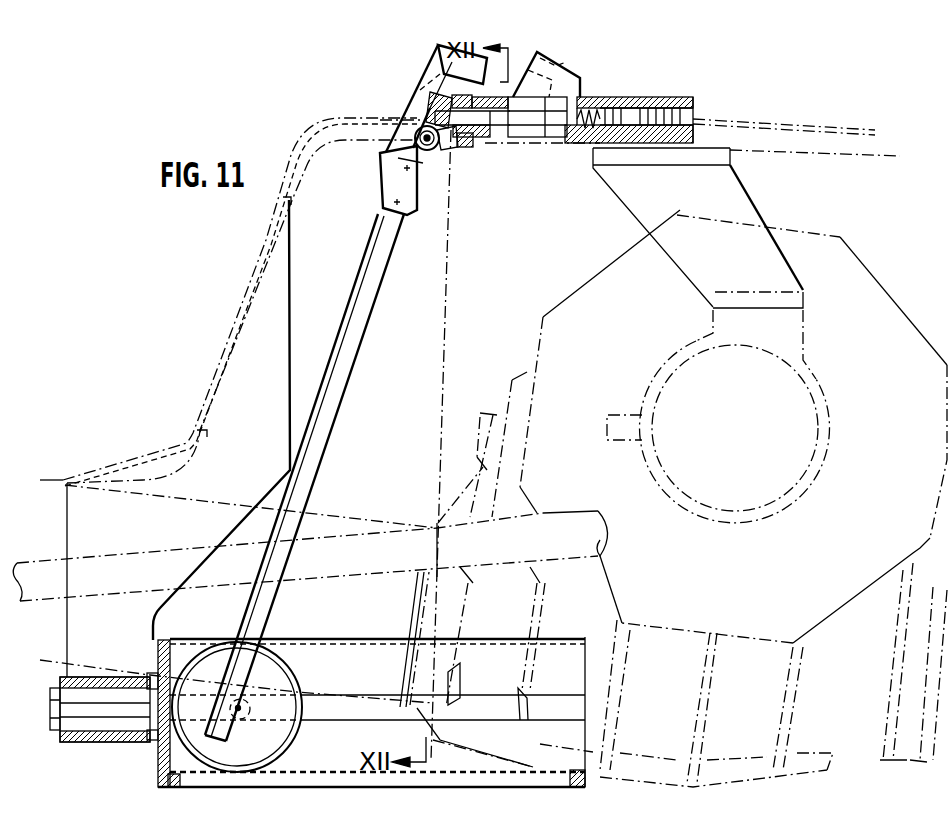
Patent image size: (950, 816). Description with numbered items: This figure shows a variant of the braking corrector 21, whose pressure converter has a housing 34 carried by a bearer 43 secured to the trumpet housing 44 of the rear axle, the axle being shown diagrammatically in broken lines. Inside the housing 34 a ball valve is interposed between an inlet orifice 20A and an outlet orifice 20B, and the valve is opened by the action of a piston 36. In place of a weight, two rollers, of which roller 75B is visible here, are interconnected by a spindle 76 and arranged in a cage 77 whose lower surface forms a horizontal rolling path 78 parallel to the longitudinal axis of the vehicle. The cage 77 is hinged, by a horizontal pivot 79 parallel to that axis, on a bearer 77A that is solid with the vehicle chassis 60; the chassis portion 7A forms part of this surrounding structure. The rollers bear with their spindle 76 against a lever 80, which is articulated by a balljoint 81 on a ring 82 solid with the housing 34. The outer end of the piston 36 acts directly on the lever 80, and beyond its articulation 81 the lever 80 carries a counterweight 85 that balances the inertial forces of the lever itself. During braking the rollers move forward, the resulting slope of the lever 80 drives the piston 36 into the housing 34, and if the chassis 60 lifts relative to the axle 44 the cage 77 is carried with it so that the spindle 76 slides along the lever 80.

The machine frame 7A is at (218, 483).
The inlet orifice 20A is at (690, 105).
The outlet orifice 20B is at (548, 70).
The braking corrector 21 is at (476, 198).
The housing 34 is at (549, 148).
The piston 36 is at (497, 138).
The bearer 43 is at (766, 208).
The trumpet housing 44 is at (838, 393).
The vehicle chassis 60 is at (289, 142).
The roller 75B is at (306, 664).
The spindle 76 is at (248, 717).
The cage 77 is at (548, 632).
The bearer 77A is at (300, 326).
The horizontal rolling path 78 is at (327, 777).
The horizontal pivot 79 is at (125, 727).
The lever 80 is at (352, 376).
The balljoint 81 is at (447, 151).
The ring 82 is at (420, 140).
The counterweight 85 is at (432, 74).